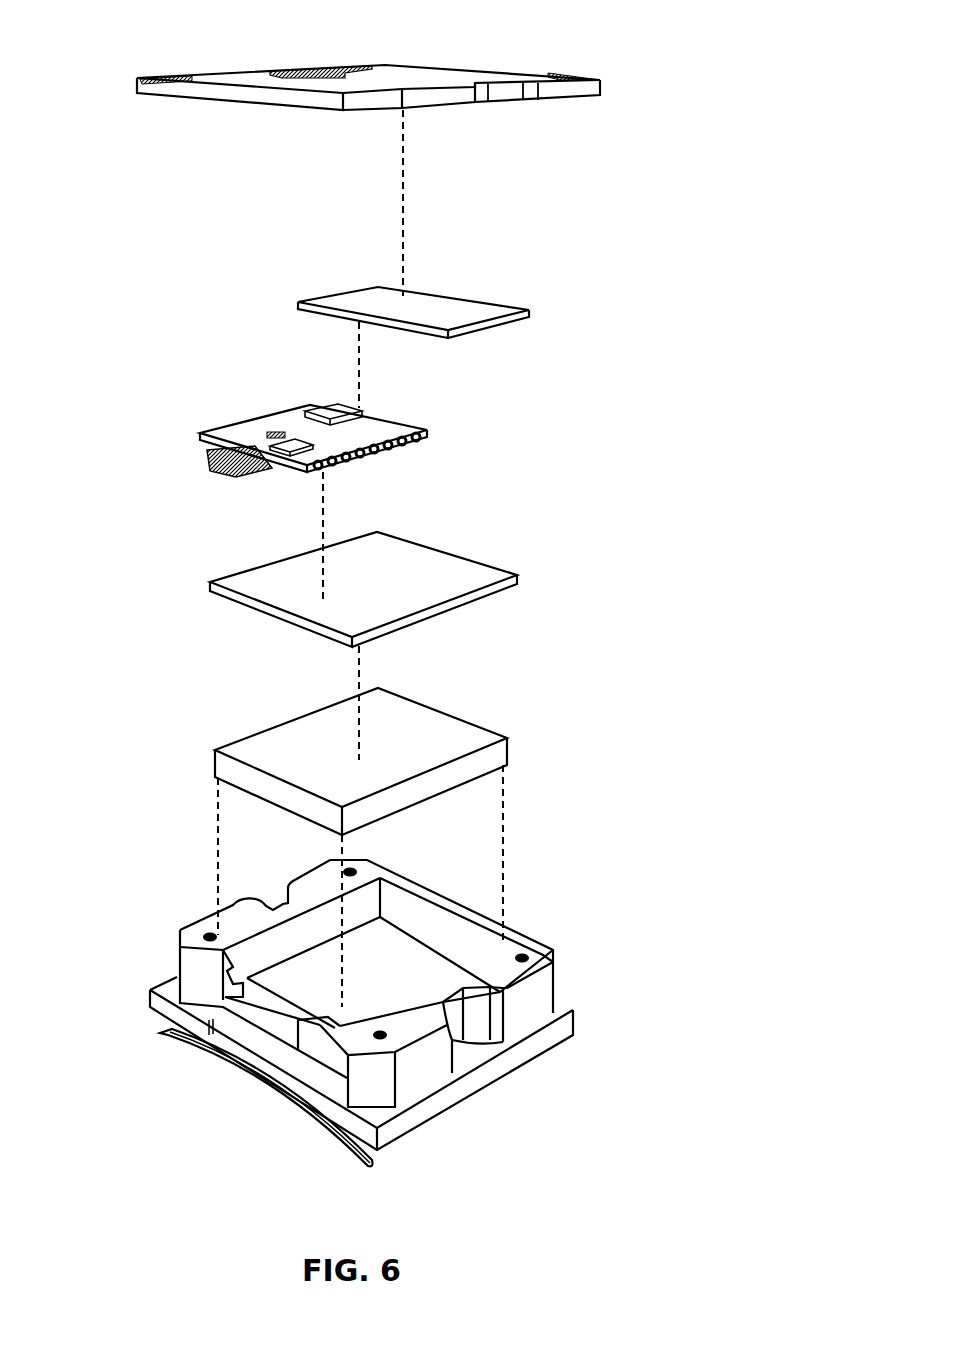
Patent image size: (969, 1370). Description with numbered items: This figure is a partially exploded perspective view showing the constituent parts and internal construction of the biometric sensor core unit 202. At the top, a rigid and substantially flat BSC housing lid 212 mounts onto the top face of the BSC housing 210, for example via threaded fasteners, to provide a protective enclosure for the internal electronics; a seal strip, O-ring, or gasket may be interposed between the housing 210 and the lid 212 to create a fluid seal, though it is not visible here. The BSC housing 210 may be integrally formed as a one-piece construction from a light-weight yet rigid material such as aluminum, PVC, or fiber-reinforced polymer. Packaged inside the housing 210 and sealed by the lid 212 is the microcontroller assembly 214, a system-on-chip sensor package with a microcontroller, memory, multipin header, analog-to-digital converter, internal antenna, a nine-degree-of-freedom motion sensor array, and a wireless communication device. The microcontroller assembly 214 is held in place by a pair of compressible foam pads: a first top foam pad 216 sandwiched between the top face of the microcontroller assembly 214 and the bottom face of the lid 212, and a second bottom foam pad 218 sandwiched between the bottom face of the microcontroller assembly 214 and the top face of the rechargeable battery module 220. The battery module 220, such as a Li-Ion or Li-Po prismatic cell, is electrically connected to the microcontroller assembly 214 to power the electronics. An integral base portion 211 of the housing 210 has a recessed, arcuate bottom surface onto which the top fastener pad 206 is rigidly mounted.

The biometric sensor core unit 202 is at (657, 104).
The BSC housing lid 212 is at (217, 80).
The first (top) foam pad 216 is at (327, 300).
The microcontroller assembly 214 is at (227, 435).
The second (bottom) foam pad 218 is at (243, 580).
The rechargeable battery module 220 is at (243, 752).
The BSC housing 210 is at (177, 958).
The base portion 211 is at (148, 990).
The top fastener pad 206 is at (208, 1050).